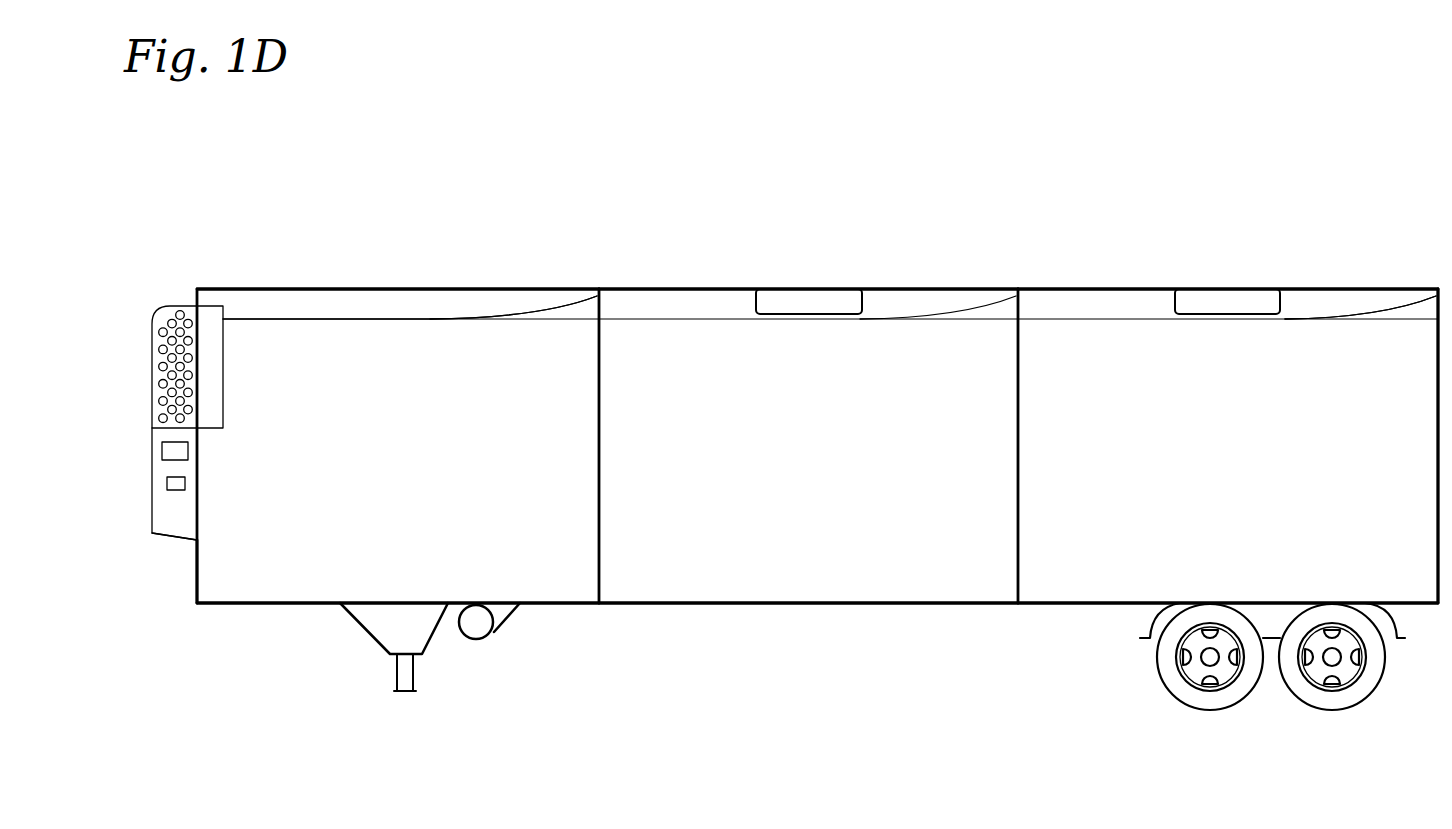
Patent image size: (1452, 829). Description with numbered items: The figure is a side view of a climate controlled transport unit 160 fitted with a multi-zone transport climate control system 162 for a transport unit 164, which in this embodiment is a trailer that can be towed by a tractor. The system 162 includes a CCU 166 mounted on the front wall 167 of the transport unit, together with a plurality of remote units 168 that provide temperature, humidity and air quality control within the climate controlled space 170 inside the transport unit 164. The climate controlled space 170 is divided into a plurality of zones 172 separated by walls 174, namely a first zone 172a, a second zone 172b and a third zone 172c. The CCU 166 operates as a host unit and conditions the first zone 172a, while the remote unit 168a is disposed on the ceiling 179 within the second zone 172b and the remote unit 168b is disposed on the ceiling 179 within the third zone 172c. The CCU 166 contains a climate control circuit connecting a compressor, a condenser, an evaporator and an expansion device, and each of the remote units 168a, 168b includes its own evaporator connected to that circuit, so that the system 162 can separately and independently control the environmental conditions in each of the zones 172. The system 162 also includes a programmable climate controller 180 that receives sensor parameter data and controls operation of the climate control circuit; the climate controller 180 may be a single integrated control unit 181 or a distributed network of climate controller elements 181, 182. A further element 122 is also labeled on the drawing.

The climate controlled transport unit 160 is at (539, 155).
The multi-zone transport climate control system 162 is at (145, 262).
The transport unit 164 is at (1378, 288).
The CCU 166 is at (179, 546).
The front wall 167 is at (191, 584).
The remote units 168 is at (1025, 257).
The remote unit 168a is at (805, 297).
The remote unit 168b is at (1234, 286).
The climate controlled space 170 is at (315, 574).
The zones 172 is at (817, 542).
The first zone 172a is at (377, 588).
The second zone 172b is at (857, 583).
The third zone 172c is at (1228, 510).
The walls 174 is at (598, 350).
The ceiling 179 is at (1333, 300).
The climate controller 180 is at (139, 448).
The integrated control unit 181 is at (166, 460).
The climate controller element 182 is at (172, 491).
The air chute 122 is at (708, 303).